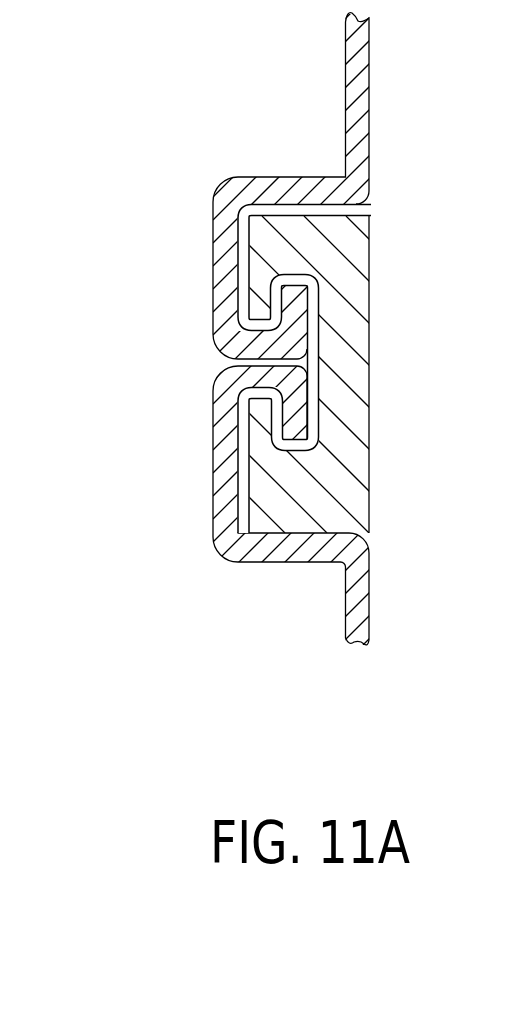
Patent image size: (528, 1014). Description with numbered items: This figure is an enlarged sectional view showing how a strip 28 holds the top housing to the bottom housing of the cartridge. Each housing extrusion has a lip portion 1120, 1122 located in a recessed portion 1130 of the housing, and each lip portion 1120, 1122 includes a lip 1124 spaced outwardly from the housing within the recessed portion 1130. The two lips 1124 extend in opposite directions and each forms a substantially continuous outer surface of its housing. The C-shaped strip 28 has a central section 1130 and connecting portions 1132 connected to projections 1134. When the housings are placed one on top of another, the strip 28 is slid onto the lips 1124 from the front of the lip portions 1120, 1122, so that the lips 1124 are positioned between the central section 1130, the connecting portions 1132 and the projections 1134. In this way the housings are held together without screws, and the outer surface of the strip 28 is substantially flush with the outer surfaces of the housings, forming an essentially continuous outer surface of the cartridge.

The strip 28 is at (373, 374).
The lip portion 1120 is at (273, 275).
The lip portion 1122 is at (290, 427).
The lip 1124 is at (307, 317).
The central section 1130 is at (360, 408).
The connecting portion 1132 is at (296, 223).
The projection 1134 is at (258, 307).